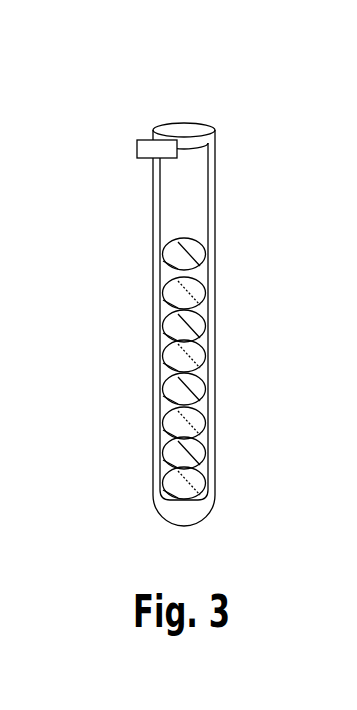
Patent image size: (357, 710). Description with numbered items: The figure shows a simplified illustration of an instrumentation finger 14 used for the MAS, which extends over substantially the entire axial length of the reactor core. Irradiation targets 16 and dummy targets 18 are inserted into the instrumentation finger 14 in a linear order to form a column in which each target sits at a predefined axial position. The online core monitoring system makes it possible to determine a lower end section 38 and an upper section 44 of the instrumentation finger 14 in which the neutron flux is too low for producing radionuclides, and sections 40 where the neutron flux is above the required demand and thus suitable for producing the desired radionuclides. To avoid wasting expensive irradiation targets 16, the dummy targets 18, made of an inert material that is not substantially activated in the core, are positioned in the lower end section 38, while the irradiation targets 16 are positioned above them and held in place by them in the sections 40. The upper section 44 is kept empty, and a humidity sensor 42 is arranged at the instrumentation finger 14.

The instrumentation finger 14 is at (147, 100).
The humidity sensor 42 is at (138, 143).
The irradiation targets 16 is at (164, 389).
The dummy targets 18 is at (164, 483).
The upper section 44 is at (217, 150).
The sections with sufficient neutron flux 40 is at (217, 245).
The lower end section 38 is at (218, 403).